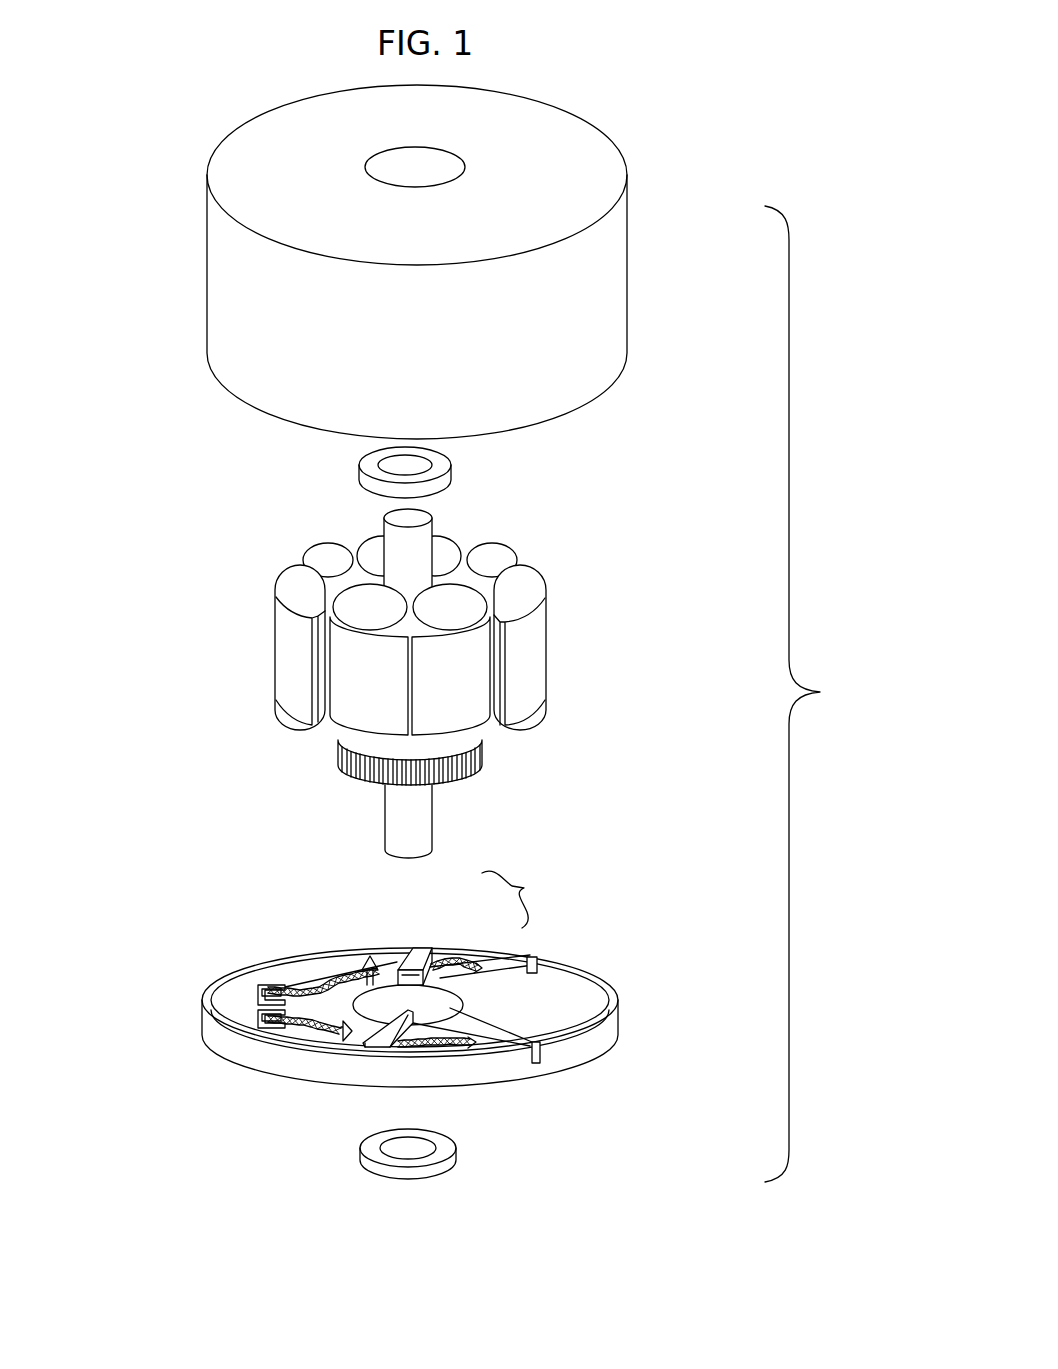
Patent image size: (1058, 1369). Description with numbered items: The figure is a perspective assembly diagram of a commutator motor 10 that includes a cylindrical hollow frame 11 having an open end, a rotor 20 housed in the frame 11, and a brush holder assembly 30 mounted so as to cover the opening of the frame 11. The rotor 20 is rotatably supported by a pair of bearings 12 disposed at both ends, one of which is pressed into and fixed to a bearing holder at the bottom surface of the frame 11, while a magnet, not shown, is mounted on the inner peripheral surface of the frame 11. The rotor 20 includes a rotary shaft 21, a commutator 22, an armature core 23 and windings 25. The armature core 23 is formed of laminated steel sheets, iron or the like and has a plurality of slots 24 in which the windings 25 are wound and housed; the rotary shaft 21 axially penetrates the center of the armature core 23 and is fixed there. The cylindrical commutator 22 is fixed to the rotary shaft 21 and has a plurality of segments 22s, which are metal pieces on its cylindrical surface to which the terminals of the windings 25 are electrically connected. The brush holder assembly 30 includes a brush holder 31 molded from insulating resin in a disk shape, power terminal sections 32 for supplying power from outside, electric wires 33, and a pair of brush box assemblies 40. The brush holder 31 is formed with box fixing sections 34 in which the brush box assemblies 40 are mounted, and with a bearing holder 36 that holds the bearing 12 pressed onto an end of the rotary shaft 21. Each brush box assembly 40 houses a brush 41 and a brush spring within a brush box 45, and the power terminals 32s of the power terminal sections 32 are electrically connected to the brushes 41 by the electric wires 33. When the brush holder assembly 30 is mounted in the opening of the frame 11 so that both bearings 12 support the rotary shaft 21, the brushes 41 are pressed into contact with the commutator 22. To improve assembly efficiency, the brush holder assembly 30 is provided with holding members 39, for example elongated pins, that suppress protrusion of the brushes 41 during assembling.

The commutator motor 10 is at (862, 747).
The cylindrical hollow frame 11 is at (596, 307).
The bearing 12 is at (438, 467).
The rotor 20 is at (555, 607).
The rotary shaft 21 is at (423, 537).
The commutator 22 is at (396, 775).
The segment 22s is at (475, 770).
The armature core 23 is at (518, 677).
The slot 24 is at (502, 628).
The winding 25 is at (364, 682).
The brush holder assembly 30 is at (598, 962).
The brush holder 31 is at (444, 1010).
The power terminal section 32 is at (217, 1029).
The power terminal 32s is at (270, 1022).
The electric wire 33 is at (313, 992).
The box fixing section 34 is at (397, 960).
The bearing holder 36 is at (448, 1008).
The holding member 39 is at (532, 960).
The brush box assembly 40 is at (461, 995).
The brush 41 is at (427, 950).
The brush box 45 is at (433, 965).